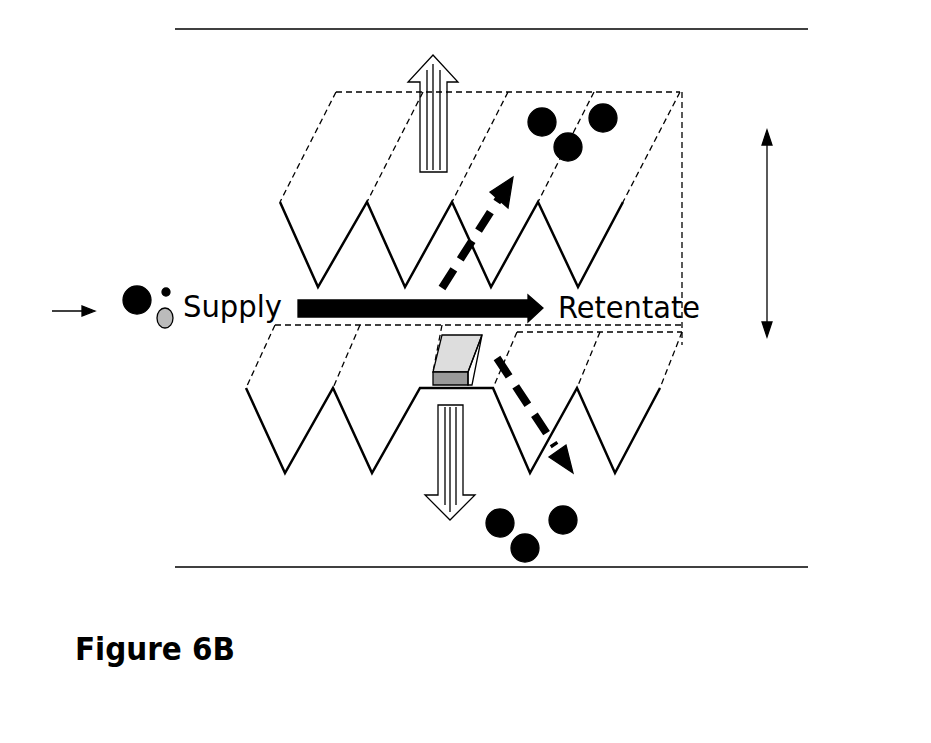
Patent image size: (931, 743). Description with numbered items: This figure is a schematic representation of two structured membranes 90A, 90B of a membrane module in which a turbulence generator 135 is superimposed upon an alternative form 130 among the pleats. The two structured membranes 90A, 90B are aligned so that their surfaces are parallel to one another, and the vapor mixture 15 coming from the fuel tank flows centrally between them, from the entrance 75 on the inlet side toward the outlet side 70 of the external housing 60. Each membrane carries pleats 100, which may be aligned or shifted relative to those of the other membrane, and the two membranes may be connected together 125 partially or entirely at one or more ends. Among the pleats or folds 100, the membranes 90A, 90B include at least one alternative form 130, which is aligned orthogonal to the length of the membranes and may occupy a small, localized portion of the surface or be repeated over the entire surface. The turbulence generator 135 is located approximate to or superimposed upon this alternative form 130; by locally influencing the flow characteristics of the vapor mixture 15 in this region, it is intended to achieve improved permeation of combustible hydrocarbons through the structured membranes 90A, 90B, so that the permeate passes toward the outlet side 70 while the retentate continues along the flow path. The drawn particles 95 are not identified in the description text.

The vapor mixture 15 is at (156, 300).
The external housing 60 is at (668, 567).
The outlet side 70 is at (379, 305).
The entrance 75 is at (52, 311).
The structured membrane 90A is at (652, 106).
The structured membrane 90B is at (663, 424).
The retained particles 95 is at (572, 122).
The pleats 100 is at (290, 230).
The connection of the two structured membranes 125 is at (683, 158).
The alternative form 130 is at (428, 405).
The turbulence generator 135 is at (460, 355).